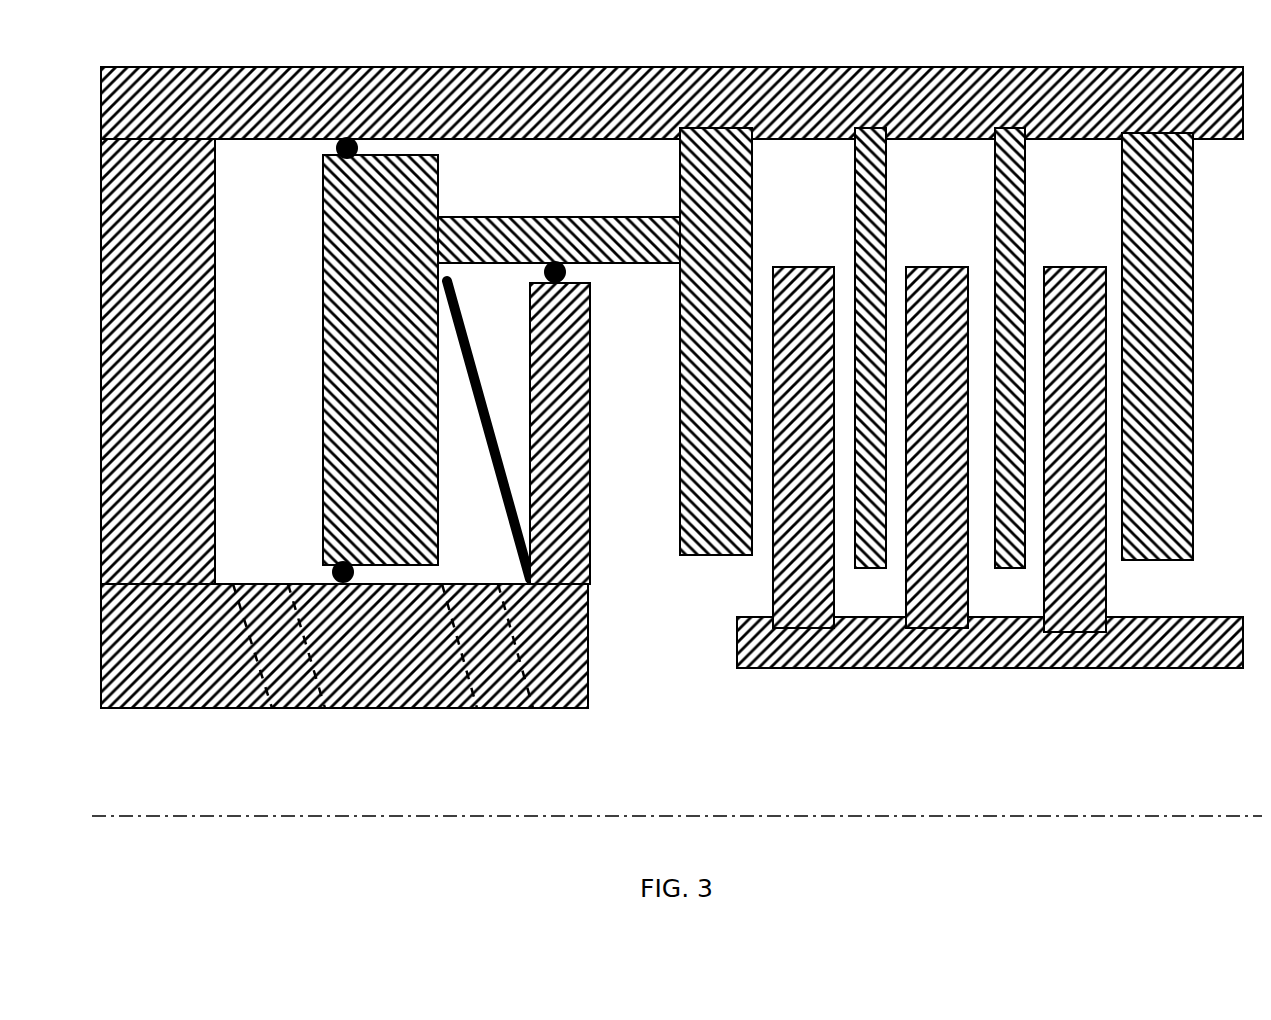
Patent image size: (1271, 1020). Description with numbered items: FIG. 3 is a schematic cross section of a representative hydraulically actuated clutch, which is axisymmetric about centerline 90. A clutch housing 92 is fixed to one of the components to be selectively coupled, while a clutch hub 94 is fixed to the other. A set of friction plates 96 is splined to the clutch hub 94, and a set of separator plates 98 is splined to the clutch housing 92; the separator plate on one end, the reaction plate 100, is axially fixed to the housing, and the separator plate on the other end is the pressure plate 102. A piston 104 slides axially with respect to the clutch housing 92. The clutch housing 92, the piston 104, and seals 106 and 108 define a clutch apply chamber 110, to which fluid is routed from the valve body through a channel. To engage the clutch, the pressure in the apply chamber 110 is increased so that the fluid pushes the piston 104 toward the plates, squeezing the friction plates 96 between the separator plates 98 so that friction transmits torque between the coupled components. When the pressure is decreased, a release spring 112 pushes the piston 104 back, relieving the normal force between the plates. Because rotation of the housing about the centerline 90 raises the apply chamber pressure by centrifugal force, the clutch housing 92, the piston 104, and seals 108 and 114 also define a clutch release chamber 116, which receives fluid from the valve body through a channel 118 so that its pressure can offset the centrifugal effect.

The centerline 90 is at (975, 818).
The clutch housing 92 is at (562, 67).
The clutch hub 94 is at (1052, 668).
The friction plates 96 is at (772, 588).
The separator plates 98 is at (988, 227).
The reaction plate 100 is at (1123, 235).
The pressure plate 102 is at (753, 235).
The piston 104 is at (322, 412).
The seal 106 is at (336, 148).
The seal 108 is at (332, 575).
The clutch apply chamber 110 is at (290, 294).
The release spring 112 is at (470, 347).
The seal 114 is at (567, 272).
The clutch release chamber 116 is at (490, 546).
The channel 118 is at (495, 742).